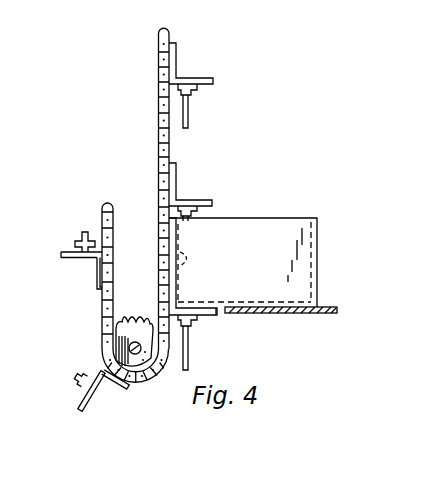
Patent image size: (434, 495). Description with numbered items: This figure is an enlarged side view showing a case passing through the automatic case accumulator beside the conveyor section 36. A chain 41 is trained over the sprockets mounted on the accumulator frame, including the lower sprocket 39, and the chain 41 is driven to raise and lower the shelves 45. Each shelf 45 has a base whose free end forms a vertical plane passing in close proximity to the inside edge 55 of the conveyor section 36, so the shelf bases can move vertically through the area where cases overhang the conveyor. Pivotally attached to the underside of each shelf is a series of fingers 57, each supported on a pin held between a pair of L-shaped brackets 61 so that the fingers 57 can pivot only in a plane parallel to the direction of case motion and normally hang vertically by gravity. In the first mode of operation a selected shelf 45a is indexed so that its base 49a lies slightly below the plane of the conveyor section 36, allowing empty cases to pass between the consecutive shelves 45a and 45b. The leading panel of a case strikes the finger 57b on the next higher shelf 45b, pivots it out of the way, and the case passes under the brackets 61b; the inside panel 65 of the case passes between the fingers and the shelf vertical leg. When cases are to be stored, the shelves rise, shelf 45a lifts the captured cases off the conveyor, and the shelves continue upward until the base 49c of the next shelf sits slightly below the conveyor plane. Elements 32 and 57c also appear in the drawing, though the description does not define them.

The stud 32 is at (192, 340).
The conveyor section 36 is at (321, 313).
The lower sprocket 39 is at (116, 385).
The chain 41 is at (102, 204).
The shelf 45 is at (193, 66).
The shelf 45a is at (188, 304).
The shelf 45b is at (186, 192).
The base 49a is at (205, 308).
The base 49c is at (80, 410).
The inside edge 55 is at (226, 316).
The finger 57 is at (189, 120).
The finger 57b is at (188, 221).
The stud 57c is at (78, 382).
The L-shaped bracket 61 is at (199, 93).
The bracket 61b is at (207, 207).
The inside panel 65 is at (158, 256).